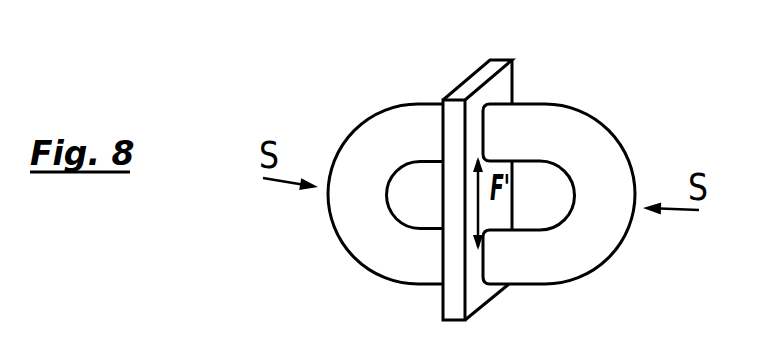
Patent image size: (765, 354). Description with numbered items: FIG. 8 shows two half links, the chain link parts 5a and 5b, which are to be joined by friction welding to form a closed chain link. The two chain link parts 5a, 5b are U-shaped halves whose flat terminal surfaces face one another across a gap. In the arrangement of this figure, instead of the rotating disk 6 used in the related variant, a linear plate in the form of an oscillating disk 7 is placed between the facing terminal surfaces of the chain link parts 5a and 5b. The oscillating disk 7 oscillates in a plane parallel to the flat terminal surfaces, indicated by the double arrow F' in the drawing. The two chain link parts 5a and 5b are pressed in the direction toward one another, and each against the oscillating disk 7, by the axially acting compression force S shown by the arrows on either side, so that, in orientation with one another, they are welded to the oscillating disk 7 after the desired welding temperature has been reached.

The chain link part 5a is at (384, 142).
The chain link part 5b is at (605, 175).
The rotating disk 6 is at (457, 300).
The oscillating disk 7 is at (478, 77).